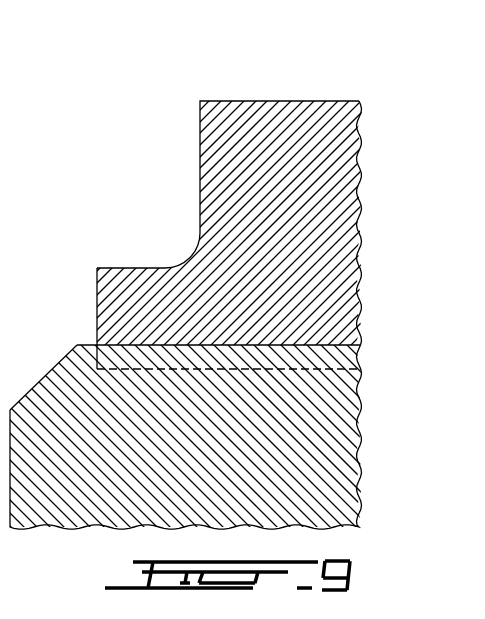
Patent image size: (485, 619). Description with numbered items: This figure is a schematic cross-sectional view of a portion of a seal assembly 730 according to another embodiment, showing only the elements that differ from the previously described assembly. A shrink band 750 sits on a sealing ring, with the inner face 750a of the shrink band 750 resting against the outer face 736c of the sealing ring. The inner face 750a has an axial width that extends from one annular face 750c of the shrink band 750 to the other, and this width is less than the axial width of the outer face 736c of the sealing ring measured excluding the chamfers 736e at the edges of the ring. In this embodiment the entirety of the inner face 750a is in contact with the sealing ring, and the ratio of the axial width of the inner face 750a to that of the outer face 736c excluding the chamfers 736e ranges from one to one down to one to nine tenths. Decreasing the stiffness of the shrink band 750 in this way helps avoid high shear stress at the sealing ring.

The seal assembly 730 is at (84, 131).
The shrink band 750 is at (279, 125).
The inner face of the shrink band 750a is at (282, 344).
The annular face of the shrink band 750c is at (96, 305).
The chamfer of the sealing ring 736e is at (33, 382).
The outer face of the sealing ring 736c is at (325, 370).